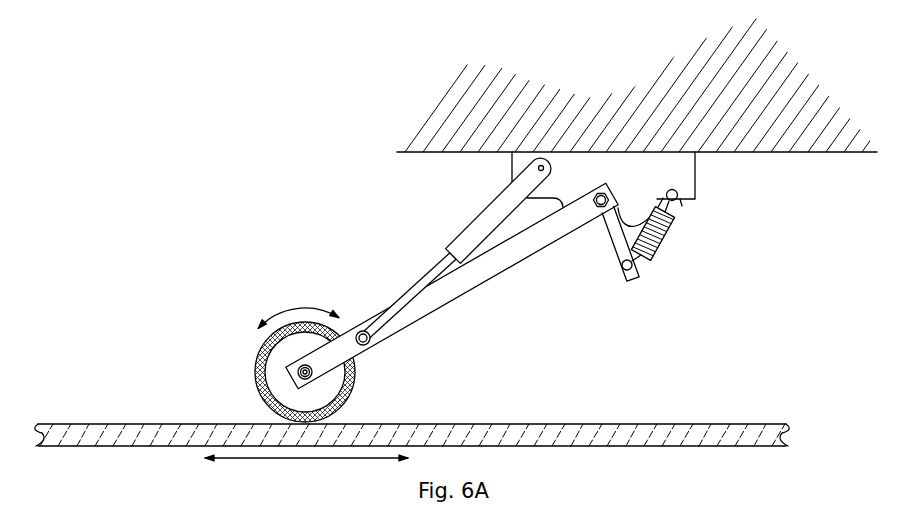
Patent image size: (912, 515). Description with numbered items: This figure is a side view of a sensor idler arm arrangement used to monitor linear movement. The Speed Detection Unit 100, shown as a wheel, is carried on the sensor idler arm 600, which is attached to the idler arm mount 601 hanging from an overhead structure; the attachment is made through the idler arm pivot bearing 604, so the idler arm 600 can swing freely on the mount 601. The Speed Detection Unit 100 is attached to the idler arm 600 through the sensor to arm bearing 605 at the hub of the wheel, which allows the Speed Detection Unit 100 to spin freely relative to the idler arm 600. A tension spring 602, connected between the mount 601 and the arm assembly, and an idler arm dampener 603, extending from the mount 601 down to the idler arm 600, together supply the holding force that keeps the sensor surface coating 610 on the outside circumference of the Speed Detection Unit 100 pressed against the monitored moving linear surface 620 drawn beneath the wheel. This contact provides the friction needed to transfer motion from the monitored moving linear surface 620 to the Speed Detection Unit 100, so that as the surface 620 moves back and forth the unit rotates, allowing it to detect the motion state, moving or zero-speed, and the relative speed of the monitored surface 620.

The Speed Detection Unit 100 is at (266, 365).
The sensor idler arm 600 is at (446, 313).
The idler arm mount 601 is at (699, 177).
The tension spring 602 is at (665, 242).
The idler arm dampener 603 is at (462, 225).
The idler arm pivot bearing 604 is at (597, 208).
The sensor to arm bearing 605 is at (318, 373).
The sensor surface coating 610 is at (247, 387).
The monitored moving linear surface 620 is at (543, 421).